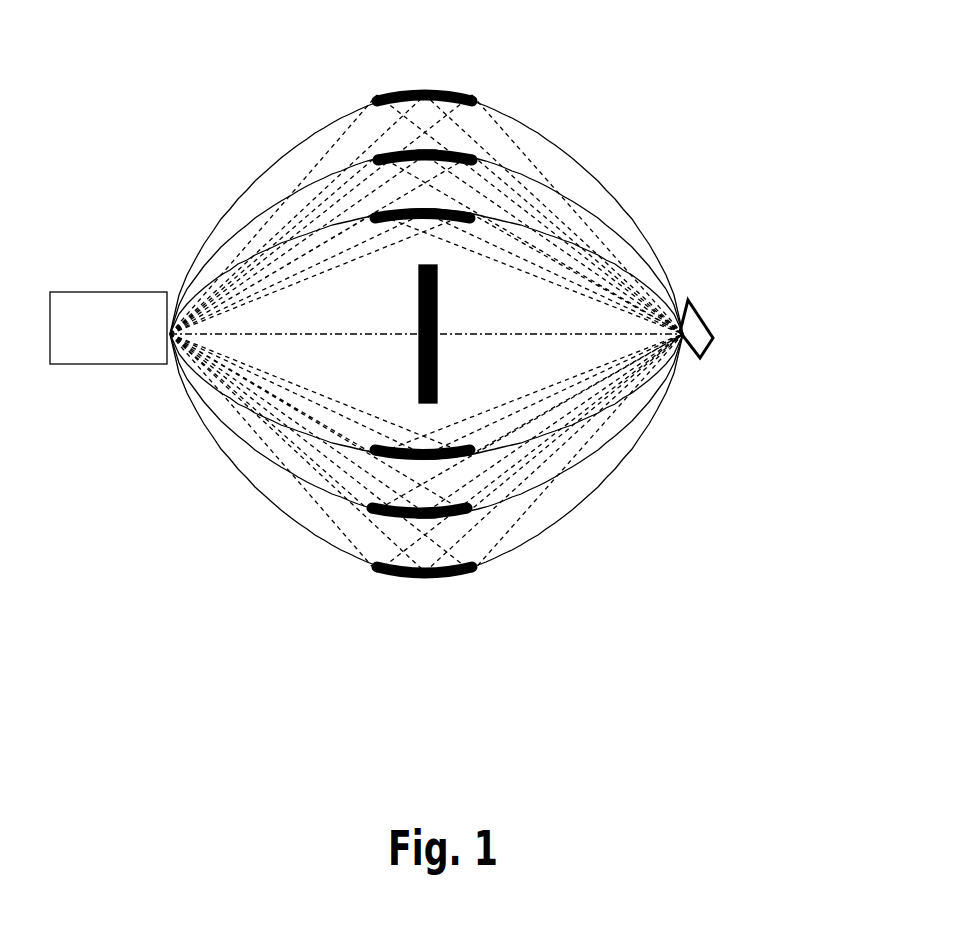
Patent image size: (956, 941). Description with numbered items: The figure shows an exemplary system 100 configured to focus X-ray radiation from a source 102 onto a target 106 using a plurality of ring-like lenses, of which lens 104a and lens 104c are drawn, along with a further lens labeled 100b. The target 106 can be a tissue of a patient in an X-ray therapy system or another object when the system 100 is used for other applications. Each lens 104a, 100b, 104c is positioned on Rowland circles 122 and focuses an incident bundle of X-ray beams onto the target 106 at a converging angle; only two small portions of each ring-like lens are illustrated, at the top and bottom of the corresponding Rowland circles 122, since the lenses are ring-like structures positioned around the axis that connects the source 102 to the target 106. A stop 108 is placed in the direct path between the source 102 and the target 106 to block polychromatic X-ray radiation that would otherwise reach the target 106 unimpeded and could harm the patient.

The system 100 is at (718, 126).
The source 102 is at (108, 328).
The ring-like lens 104a is at (368, 215).
The second lens / optical element 100b is at (384, 146).
The ring-like lens 104c is at (457, 82).
The target 106 is at (712, 311).
The stop 108 is at (416, 357).
The Rowland circles 122 is at (233, 235).